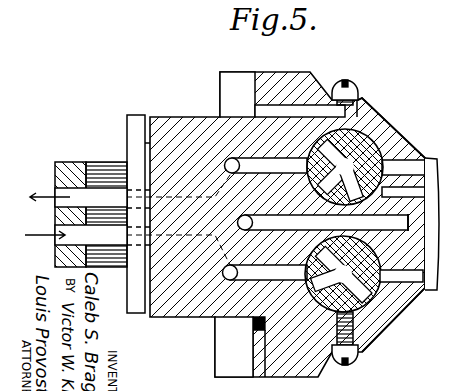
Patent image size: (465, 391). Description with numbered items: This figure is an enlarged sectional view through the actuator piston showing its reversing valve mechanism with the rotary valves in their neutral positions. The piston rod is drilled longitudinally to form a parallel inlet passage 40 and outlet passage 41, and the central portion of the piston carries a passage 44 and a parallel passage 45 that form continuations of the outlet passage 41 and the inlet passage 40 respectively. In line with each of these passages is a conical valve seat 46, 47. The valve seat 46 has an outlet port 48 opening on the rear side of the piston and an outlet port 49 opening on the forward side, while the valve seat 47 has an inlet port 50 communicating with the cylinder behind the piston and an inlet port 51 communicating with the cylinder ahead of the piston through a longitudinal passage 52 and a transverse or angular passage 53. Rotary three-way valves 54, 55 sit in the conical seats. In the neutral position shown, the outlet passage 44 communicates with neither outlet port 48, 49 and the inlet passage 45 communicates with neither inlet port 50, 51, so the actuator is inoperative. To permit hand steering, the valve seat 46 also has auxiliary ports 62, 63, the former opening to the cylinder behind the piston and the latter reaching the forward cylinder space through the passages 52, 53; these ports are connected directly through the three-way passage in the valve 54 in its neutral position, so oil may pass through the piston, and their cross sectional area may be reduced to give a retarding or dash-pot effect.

The inlet passage 40 is at (66, 235).
The outlet passage 41 is at (81, 183).
The passage 44 is at (232, 159).
The parallel passage 45 is at (262, 273).
The conical valve seat 46 is at (372, 113).
The conical valve seat 47 is at (367, 293).
The outlet port 48 is at (410, 148).
The outlet port 49 is at (313, 102).
The inlet port 50 is at (400, 282).
The inlet port 51 is at (352, 233).
The longitudinal passage 52 is at (323, 224).
The transverse or angular passage 53 is at (229, 232).
The rotary three-way valve 54 is at (376, 145).
The rotary three-way valve 55 is at (317, 371).
The auxiliary port 62 is at (418, 192).
The auxiliary port 63 is at (269, 169).